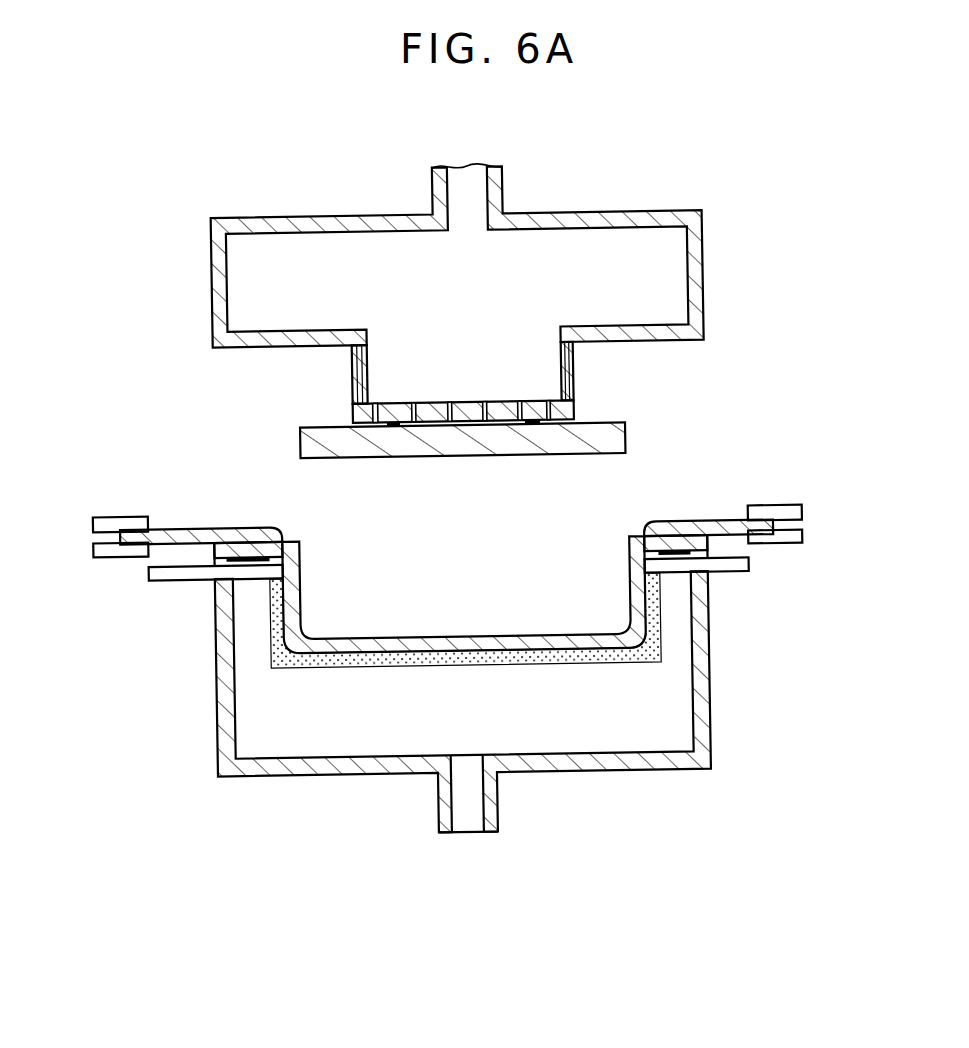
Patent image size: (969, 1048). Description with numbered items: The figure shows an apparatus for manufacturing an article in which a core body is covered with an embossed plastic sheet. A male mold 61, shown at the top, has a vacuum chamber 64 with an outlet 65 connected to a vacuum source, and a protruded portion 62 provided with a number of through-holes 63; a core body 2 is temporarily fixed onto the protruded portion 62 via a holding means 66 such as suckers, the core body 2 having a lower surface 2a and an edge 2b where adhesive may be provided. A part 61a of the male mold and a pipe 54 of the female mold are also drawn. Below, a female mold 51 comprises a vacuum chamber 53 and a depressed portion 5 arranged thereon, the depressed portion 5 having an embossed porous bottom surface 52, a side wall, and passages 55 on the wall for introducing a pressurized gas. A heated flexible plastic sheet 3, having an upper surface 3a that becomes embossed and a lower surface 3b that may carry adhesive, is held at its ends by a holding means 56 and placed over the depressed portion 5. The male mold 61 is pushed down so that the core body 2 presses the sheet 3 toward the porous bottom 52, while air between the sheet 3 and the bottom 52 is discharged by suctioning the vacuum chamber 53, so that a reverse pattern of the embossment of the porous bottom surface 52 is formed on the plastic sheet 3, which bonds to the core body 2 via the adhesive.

The core body 2 is at (623, 439).
The lower surface of core body 2a is at (522, 459).
The edge of core body surface 2b is at (590, 422).
The flexible plastic sheet 3 is at (720, 526).
The upper surface of plastic sheet 3a is at (152, 560).
The lower surface of plastic sheet 3b is at (401, 638).
The depressed portion 5 is at (366, 598).
The female mold 51 is at (710, 719).
The embossed porous bottom surface 52 is at (662, 643).
The vacuum chamber 53 is at (639, 743).
The drain pipe 54 is at (459, 817).
The passages of pressurized gas 55 is at (166, 577).
The holding means 56 is at (95, 519).
The male mold 61 is at (705, 282).
The housing flange 61a is at (659, 343).
The protruded portion 62 is at (351, 388).
The through-holes 63 is at (414, 407).
The vacuum chamber 64 is at (628, 256).
The outlet 65 is at (483, 185).
The holding means 66 is at (399, 429).